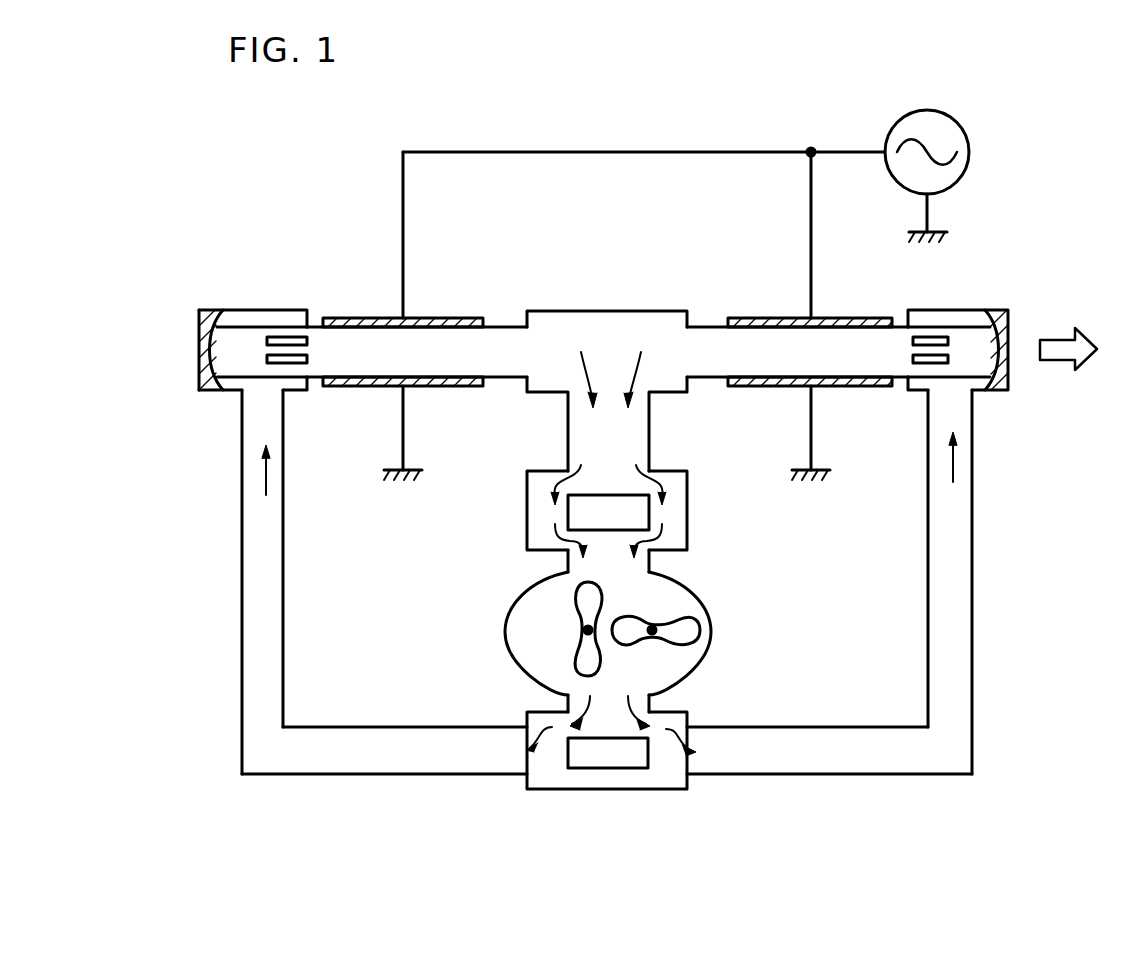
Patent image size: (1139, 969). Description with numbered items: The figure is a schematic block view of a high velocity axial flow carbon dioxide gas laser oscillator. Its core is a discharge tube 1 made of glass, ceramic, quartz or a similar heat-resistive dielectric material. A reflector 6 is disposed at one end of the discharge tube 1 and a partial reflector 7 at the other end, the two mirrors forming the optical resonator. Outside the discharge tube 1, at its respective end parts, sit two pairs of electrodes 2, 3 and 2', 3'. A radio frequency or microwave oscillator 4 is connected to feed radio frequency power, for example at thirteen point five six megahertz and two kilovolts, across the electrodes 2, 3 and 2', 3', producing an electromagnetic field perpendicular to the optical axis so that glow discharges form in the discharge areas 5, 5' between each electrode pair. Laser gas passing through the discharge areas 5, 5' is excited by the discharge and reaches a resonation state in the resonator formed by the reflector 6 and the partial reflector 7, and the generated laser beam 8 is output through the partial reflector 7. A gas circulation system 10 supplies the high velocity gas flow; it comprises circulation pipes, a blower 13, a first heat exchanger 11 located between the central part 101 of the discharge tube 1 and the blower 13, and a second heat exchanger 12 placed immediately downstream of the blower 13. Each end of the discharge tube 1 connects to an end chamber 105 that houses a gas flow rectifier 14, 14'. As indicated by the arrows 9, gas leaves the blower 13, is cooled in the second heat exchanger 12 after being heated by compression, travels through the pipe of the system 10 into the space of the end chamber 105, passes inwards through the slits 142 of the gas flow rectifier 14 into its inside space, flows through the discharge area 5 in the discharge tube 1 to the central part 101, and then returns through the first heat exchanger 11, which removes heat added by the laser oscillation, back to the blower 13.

The discharge tube 1 is at (315, 340).
The electrode 2 is at (403, 288).
The electrode 2' is at (810, 291).
The electrode 3 is at (403, 417).
The electrode 3' is at (810, 403).
The radio frequency or microwave oscillator 4 is at (931, 112).
The discharge area 5 is at (375, 304).
The discharge area 5' is at (869, 390).
The reflector 6 is at (185, 378).
The partial reflector 7 is at (1013, 322).
The laser beam 8 is at (1051, 362).
The arrows 9 is at (263, 480).
The gas circulation system 10 is at (838, 776).
The first heat exchanger 11 is at (527, 511).
The second heat exchanger 12 is at (620, 792).
The blower 13 is at (713, 630).
The gas flow rectifier 14 is at (260, 315).
The gas flow rectifier 14' is at (955, 316).
The central part 101 is at (604, 324).
The end chamber 105 is at (241, 312).
The slits 142 is at (283, 338).